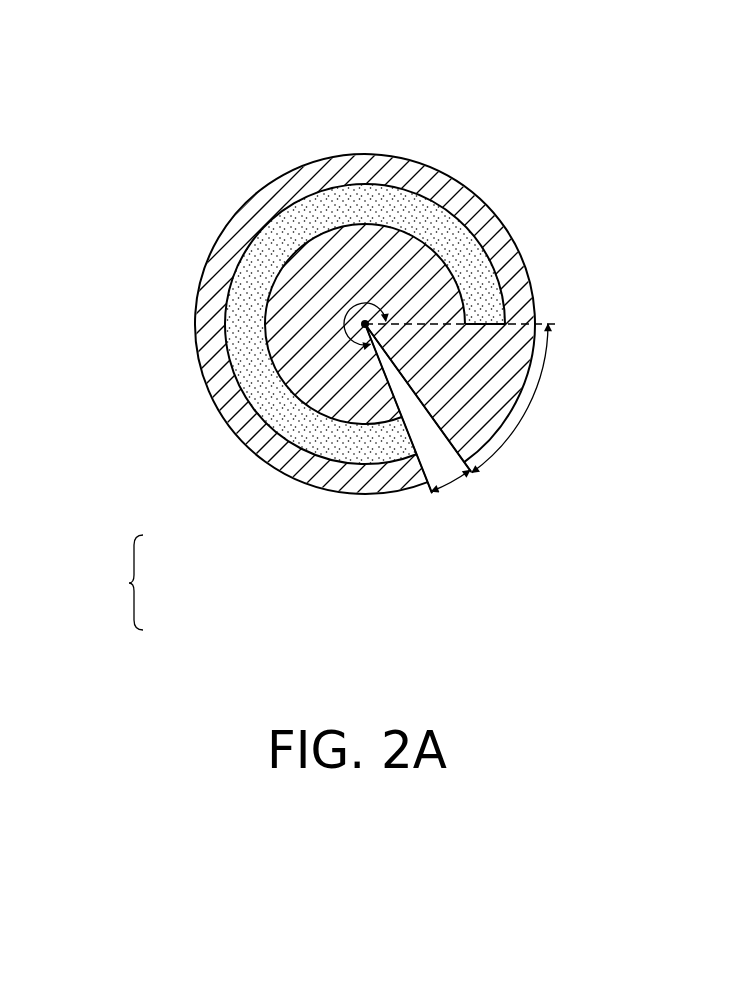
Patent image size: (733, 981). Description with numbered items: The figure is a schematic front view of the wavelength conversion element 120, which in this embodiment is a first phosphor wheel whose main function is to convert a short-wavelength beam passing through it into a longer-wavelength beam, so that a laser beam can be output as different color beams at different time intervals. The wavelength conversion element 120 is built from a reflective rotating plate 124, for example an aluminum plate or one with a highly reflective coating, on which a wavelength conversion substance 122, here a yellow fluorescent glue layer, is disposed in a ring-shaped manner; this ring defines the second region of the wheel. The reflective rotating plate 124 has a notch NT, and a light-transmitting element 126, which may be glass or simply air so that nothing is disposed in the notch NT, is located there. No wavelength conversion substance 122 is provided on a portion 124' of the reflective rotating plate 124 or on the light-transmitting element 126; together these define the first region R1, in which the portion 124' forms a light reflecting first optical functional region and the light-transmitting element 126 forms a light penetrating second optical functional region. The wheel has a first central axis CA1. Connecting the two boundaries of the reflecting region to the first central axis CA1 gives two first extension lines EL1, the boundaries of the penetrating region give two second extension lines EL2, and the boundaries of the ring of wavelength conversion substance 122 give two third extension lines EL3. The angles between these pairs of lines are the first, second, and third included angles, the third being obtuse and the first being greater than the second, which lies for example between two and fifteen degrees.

The wavelength conversion element 120 is at (645, 647).
The wavelength conversion substance 122 is at (360, 203).
The reflective rotating plate 124 is at (365, 297).
The portion of the reflective rotating plate 124' is at (570, 344).
The light-transmitting element 126 is at (410, 428).
The notch NT is at (403, 395).
The first central axis CA1 is at (365, 324).
The first extension lines EL1 is at (552, 324).
The second extension lines EL2 is at (478, 482).
The third extension lines EL3 is at (434, 500).
The first region R1 is at (154, 585).